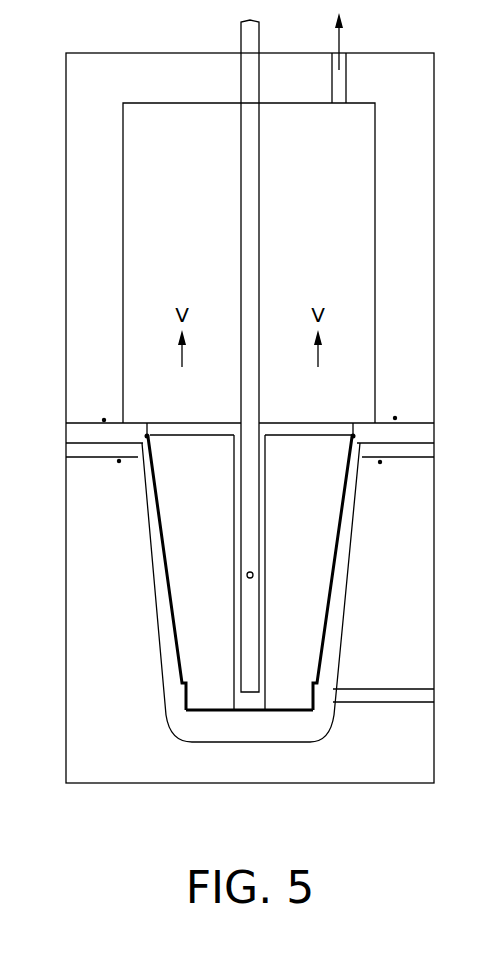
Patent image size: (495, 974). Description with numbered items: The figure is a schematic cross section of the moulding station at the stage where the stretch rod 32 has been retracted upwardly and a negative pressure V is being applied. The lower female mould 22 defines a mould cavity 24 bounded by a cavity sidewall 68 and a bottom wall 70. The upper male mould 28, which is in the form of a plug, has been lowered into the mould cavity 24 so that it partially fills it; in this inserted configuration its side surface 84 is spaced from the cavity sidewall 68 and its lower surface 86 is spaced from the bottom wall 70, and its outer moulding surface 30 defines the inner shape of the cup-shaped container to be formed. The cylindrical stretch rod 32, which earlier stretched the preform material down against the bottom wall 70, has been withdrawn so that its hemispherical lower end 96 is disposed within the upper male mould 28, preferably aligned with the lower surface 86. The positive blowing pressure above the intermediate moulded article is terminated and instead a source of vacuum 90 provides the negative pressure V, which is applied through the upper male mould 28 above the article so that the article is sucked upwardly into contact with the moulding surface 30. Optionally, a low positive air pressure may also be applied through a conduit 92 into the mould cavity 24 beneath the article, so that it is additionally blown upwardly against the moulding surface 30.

The lower female mould 22 is at (403, 760).
The mould cavity 24 is at (297, 720).
The upper male mould 28 is at (312, 537).
The outer moulding surface 30 is at (338, 504).
The stretch rod 32 is at (250, 607).
The cavity sidewall 68 is at (333, 625).
The bottom wall 70 is at (247, 743).
The side surface 84 is at (172, 601).
The lower surface 86 is at (208, 705).
The source of vacuum 90 is at (342, 42).
The conduit 92 is at (408, 703).
The lower end 96 is at (237, 703).